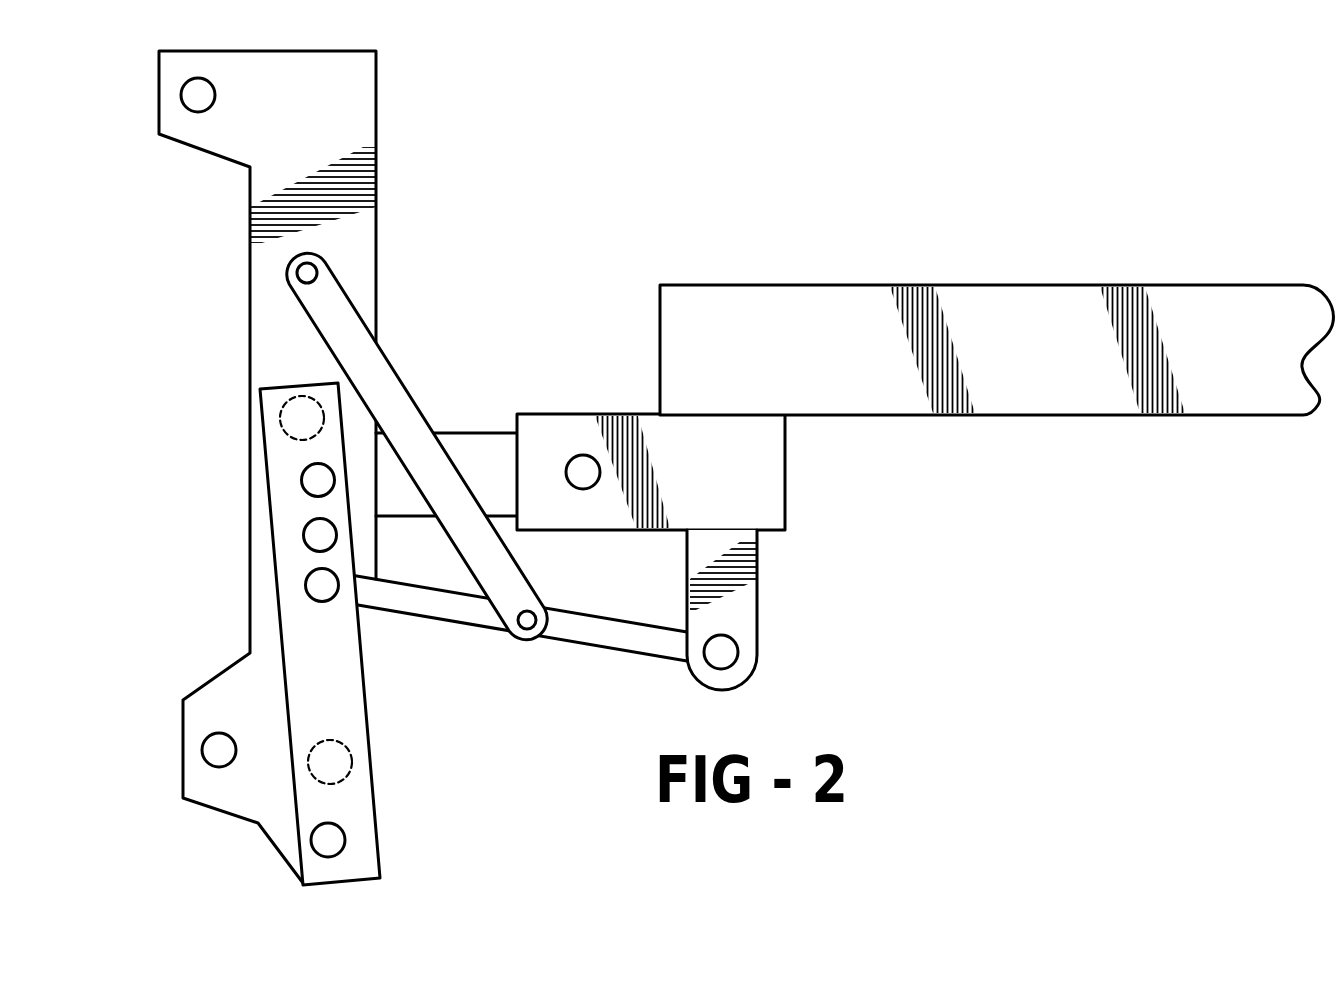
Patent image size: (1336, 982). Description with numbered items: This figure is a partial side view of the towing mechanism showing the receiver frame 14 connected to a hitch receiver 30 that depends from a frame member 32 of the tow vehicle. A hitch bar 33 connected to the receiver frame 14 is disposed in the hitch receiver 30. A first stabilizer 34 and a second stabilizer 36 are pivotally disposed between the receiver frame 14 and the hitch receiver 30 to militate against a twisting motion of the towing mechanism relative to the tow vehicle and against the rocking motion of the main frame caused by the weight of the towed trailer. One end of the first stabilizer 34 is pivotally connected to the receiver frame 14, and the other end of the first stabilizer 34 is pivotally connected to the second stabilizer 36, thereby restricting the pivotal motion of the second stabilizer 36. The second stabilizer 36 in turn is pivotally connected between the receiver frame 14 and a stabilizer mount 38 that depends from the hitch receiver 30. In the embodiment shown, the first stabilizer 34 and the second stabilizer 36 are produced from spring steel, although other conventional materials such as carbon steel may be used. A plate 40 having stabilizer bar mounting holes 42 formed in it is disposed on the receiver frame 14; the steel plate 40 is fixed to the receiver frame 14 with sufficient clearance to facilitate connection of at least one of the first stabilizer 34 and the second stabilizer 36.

The receiver frame 14 is at (246, 258).
The hitch receiver 30 is at (787, 474).
The frame member 32 is at (778, 285).
The hitch bar 33 is at (470, 432).
The first stabilizer 34 is at (388, 385).
The second stabilizer 36 is at (542, 640).
The stabilizer mount 38 is at (758, 606).
The plate 40 is at (263, 458).
The stabilizer bar mounting holes 42 is at (312, 488).